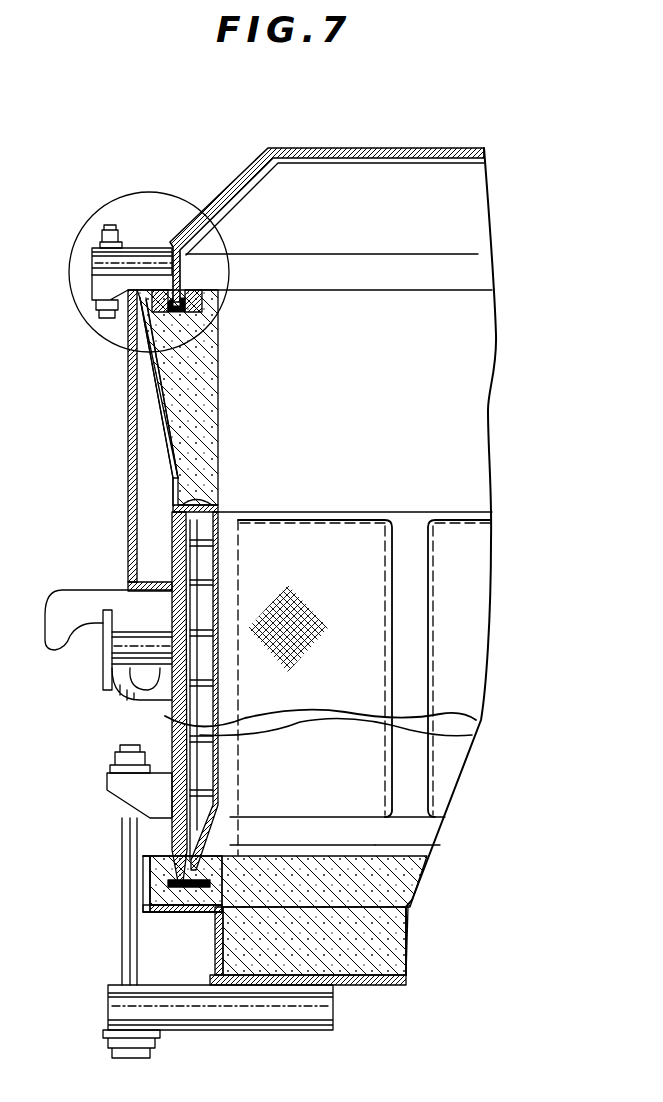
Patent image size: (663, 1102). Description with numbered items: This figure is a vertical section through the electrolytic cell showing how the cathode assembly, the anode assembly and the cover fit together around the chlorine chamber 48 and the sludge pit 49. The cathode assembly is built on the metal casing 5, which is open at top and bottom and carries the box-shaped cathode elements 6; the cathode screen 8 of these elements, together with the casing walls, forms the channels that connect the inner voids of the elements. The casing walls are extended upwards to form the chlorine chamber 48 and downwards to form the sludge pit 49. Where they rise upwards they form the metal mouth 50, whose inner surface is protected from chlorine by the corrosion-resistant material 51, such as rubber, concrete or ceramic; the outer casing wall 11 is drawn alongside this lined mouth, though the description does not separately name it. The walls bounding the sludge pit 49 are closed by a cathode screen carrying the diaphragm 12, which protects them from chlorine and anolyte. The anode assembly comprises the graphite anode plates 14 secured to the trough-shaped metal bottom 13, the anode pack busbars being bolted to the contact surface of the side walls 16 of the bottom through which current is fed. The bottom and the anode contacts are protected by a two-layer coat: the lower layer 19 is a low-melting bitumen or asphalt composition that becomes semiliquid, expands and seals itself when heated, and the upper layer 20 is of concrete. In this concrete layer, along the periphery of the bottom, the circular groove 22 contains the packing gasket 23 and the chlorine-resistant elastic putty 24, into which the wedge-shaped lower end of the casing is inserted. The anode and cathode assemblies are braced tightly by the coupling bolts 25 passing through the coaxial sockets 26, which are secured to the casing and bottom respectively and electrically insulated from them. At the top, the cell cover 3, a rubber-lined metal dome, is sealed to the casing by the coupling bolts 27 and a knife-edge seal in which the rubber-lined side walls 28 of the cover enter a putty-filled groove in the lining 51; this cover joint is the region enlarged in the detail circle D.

The cell cover 3 is at (235, 190).
The chlorine chamber 48 is at (484, 403).
The detail circle D is at (86, 327).
The coupling bolts 27 is at (92, 269).
The side walls of the cover 28 is at (202, 302).
The outer wall 11 is at (145, 543).
The metal casing 5 is at (140, 576).
The corrosion-resistant material 51 is at (172, 444).
The metal mouth 50 is at (176, 482).
The cathode screen 8 is at (222, 574).
The cathode elements 6 is at (378, 603).
The diaphragm 12 is at (360, 684).
The coaxial sockets 26 is at (110, 783).
The coupling bolts 25 is at (125, 833).
The circular groove 22 is at (255, 861).
The chlorine-resistant elastic putty 24 is at (152, 868).
The packing gasket 23 is at (150, 888).
The upper layer 20 is at (414, 888).
The lower layer 19 is at (392, 944).
The side walls of the bottom 16 is at (214, 952).
The metal bottom 13 is at (368, 986).
The sludge pit 49 is at (412, 816).
The graphite anode plates 14 is at (438, 833).